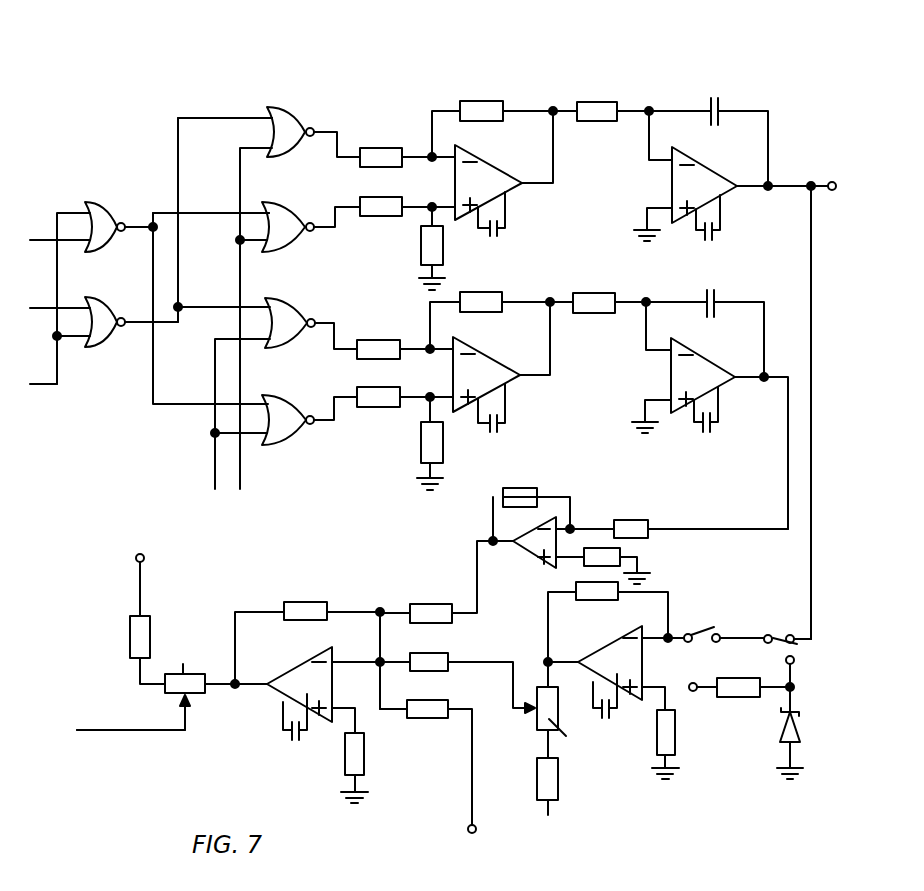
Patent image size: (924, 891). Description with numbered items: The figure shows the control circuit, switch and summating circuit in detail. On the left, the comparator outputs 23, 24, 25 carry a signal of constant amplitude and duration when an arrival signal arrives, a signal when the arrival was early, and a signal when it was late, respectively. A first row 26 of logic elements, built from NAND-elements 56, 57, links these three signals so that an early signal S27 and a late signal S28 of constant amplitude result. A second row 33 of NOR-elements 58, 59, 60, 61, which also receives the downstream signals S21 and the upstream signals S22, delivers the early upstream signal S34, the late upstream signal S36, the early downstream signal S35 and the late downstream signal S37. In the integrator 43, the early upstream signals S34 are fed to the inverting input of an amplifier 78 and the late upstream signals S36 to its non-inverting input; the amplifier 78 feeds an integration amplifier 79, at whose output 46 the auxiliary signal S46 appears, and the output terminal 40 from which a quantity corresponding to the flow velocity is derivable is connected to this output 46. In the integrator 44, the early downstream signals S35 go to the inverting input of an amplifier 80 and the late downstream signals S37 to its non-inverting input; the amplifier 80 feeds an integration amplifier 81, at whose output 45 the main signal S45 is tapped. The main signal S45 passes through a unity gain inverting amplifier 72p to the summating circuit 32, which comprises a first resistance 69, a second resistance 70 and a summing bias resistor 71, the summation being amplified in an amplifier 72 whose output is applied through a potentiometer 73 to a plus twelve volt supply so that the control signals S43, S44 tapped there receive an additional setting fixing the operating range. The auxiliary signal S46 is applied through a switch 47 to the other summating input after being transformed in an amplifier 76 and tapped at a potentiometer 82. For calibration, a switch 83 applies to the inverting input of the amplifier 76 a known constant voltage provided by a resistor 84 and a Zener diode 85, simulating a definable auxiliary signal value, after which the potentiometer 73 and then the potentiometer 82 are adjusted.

The output 23 is at (43, 388).
The output 24 is at (40, 305).
The output 25 is at (40, 236).
The first row of logic elements 26 is at (131, 243).
The summating circuit 32 is at (451, 711).
The second row of logic elements 33 is at (312, 240).
The output terminal 40 is at (831, 181).
The integrator 43 is at (600, 188).
The integrator 44 is at (597, 388).
The output 45 is at (788, 447).
The output 46 is at (789, 182).
The switch 47 is at (700, 623).
The NAND-element 56 is at (103, 222).
The NAND-element 57 is at (96, 340).
The NOR-element 58 is at (289, 118).
The NOR-element 59 is at (301, 301).
The NOR-element 60 is at (295, 216).
The NOR-element 61 is at (284, 402).
The first resistance 69 is at (416, 600).
The second resistance 70 is at (457, 670).
The summing bias resistor 71 is at (439, 772).
The amplifier 72 is at (305, 666).
The unity gain inverting amplifier 72p is at (527, 551).
The potentiometer 73 is at (152, 644).
The amplifier 76 is at (605, 645).
The amplifier 78 is at (488, 175).
The integration amplifier 79 is at (707, 180).
The amplifier 80 is at (497, 369).
The integration amplifier 81 is at (714, 371).
The potentiometer 82 is at (552, 773).
The switch 83 is at (778, 633).
The resistor 84 is at (727, 693).
The Zener diode 85 is at (777, 717).
The downstream signal S21 is at (212, 478).
The upstream signal S22 is at (243, 478).
The early signal S27 is at (224, 116).
The late signal S28 is at (205, 212).
The early upstream signal S34 is at (331, 130).
The early downstream signal S35 is at (320, 321).
The late upstream signal S36 is at (323, 232).
The late downstream signal S37 is at (344, 397).
The control signal S43 is at (140, 733).
The control signal S44 is at (140, 733).
The main signal S45 is at (694, 529).
The auxiliary signal S46 is at (810, 569).